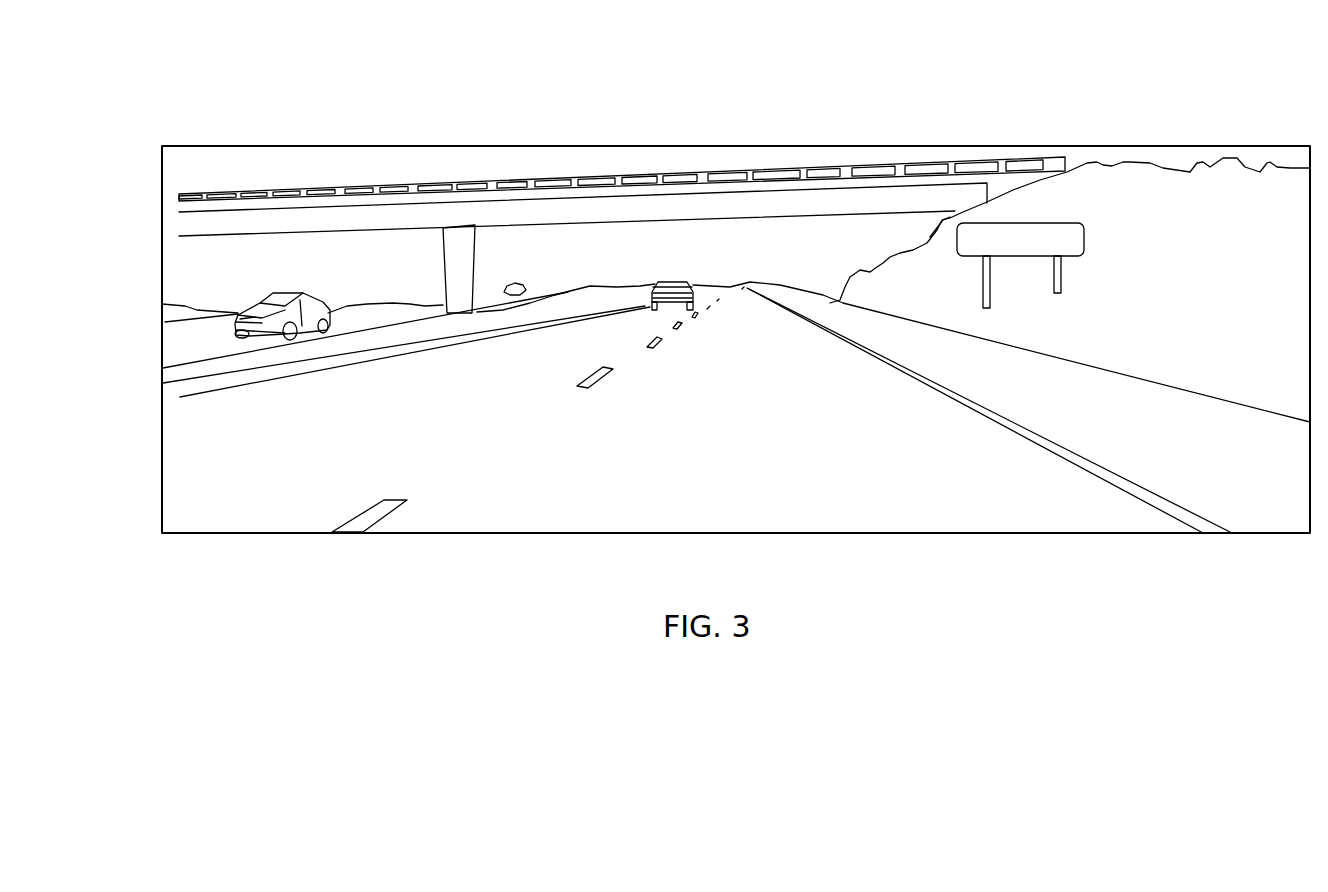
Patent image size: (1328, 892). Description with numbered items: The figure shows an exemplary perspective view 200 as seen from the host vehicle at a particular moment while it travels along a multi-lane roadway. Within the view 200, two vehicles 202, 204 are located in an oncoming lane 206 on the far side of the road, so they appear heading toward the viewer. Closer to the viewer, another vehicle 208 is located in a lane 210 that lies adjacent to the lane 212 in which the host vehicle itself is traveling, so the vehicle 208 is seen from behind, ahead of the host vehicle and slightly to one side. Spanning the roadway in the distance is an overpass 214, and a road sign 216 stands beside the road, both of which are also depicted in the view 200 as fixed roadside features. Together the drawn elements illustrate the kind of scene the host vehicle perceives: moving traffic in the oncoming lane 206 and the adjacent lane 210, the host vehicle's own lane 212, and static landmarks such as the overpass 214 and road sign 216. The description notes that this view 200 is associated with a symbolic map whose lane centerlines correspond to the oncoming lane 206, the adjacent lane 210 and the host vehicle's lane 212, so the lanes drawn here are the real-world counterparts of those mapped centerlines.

The view 200 is at (246, 78).
The vehicle 202 is at (258, 306).
The vehicle 204 is at (517, 284).
The oncoming lane 206 is at (167, 347).
The vehicle 208 is at (667, 282).
The lane 210 is at (288, 471).
The lane 212 is at (753, 471).
The overpass 214 is at (413, 184).
The road sign 216 is at (1043, 223).